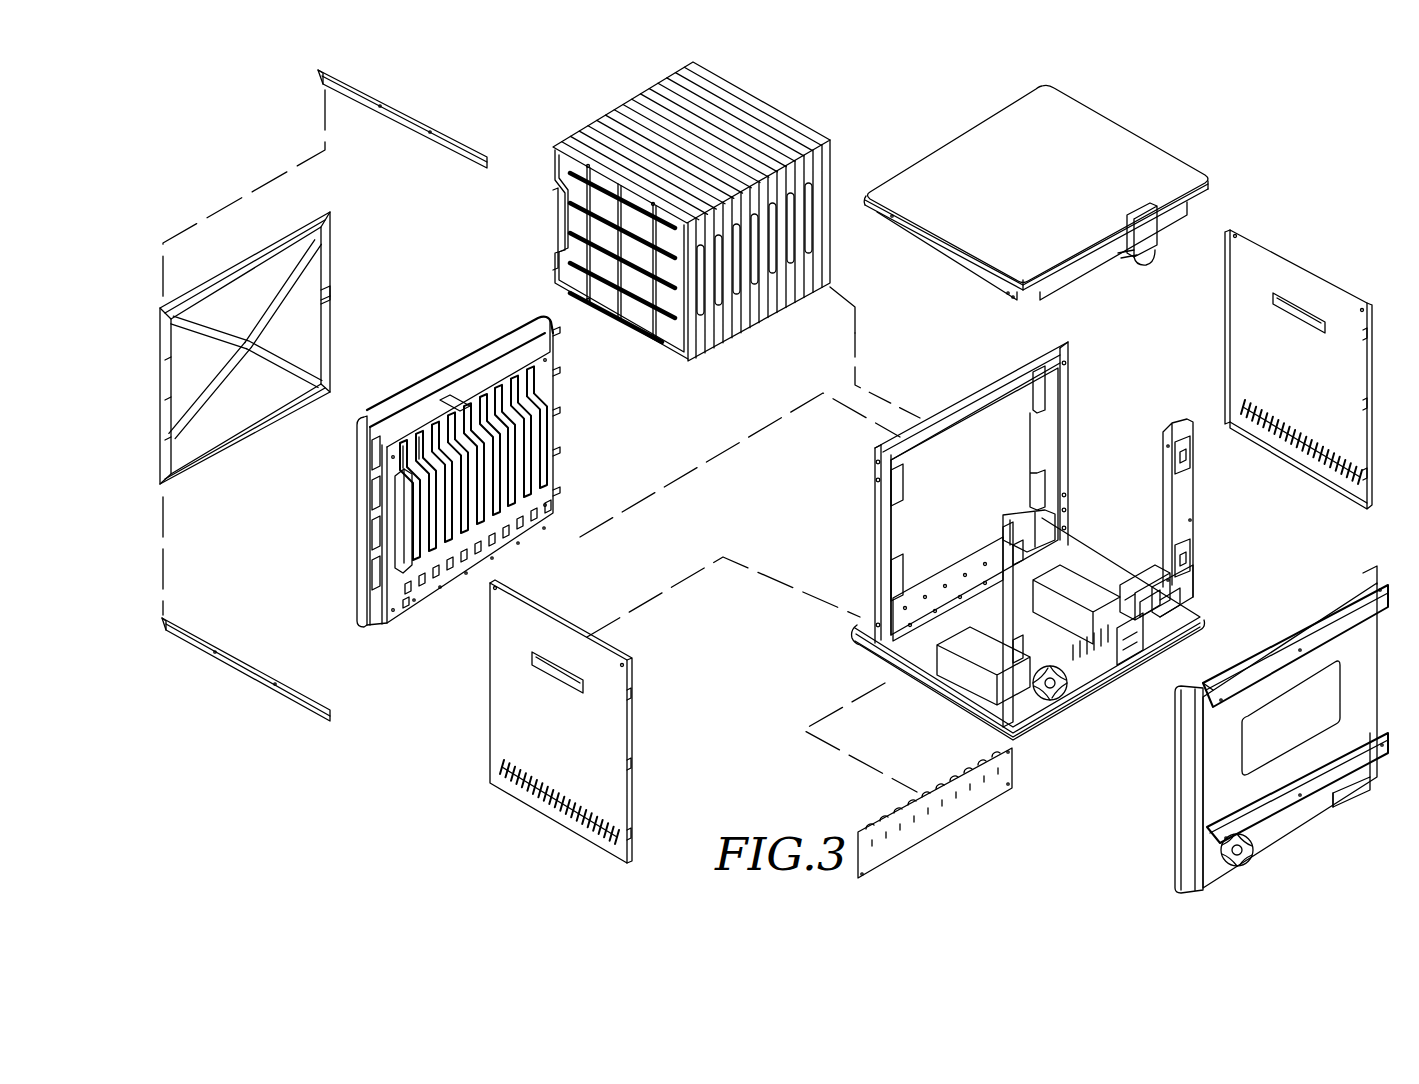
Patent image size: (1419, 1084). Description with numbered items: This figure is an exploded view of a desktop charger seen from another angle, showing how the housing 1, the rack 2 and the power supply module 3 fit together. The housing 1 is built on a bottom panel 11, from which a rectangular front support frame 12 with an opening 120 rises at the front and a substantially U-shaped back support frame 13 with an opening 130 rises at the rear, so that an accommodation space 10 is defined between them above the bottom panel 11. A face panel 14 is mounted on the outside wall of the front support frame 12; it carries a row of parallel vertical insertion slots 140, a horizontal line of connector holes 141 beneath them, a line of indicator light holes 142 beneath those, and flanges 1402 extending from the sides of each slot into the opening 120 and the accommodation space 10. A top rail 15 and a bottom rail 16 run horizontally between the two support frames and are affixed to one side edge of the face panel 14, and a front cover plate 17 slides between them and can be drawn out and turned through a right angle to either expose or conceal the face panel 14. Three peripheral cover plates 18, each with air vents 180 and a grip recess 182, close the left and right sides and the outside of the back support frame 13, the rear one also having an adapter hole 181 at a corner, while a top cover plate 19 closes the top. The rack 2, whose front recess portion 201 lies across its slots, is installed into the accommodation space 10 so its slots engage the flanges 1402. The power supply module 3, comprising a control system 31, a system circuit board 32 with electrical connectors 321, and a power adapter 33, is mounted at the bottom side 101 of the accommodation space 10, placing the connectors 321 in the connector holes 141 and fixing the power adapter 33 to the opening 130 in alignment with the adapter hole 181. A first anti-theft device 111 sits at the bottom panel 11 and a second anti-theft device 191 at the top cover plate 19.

The housing 1 is at (270, 797).
The rack 2 is at (662, 211).
The front recess portion 201 is at (556, 250).
The power supply module 3 is at (1113, 642).
The accommodation space 10 is at (1030, 538).
The bottom panel 11 is at (1005, 625).
The bottom side 101 is at (893, 663).
The front support frame 12 is at (939, 492).
The opening 120 is at (930, 522).
The back support frame 13 is at (1183, 579).
The opening 130 is at (1133, 535).
The face panel 14 is at (420, 485).
The vertical insertion slots 140 is at (403, 572).
The connector holes 141 is at (450, 567).
The indicator light holes 142 is at (410, 604).
The flanges 1402 is at (423, 508).
The top rail 15 is at (405, 112).
The bottom rail 16 is at (246, 663).
The front cover plate 17 is at (252, 410).
The peripheral cover plates 18 is at (1247, 297).
The air vents 180 is at (1252, 854).
The adapter hole 181 is at (1353, 787).
The grip recess 182 is at (580, 693).
The top cover plate 19 is at (1040, 192).
The second anti-theft device 191 is at (1146, 233).
The control system 31 is at (957, 672).
The system circuit board 32 is at (921, 813).
The electrical connectors 321 is at (900, 809).
The power adapter 33 is at (1150, 588).
The first anti-theft device 111 is at (1123, 668).